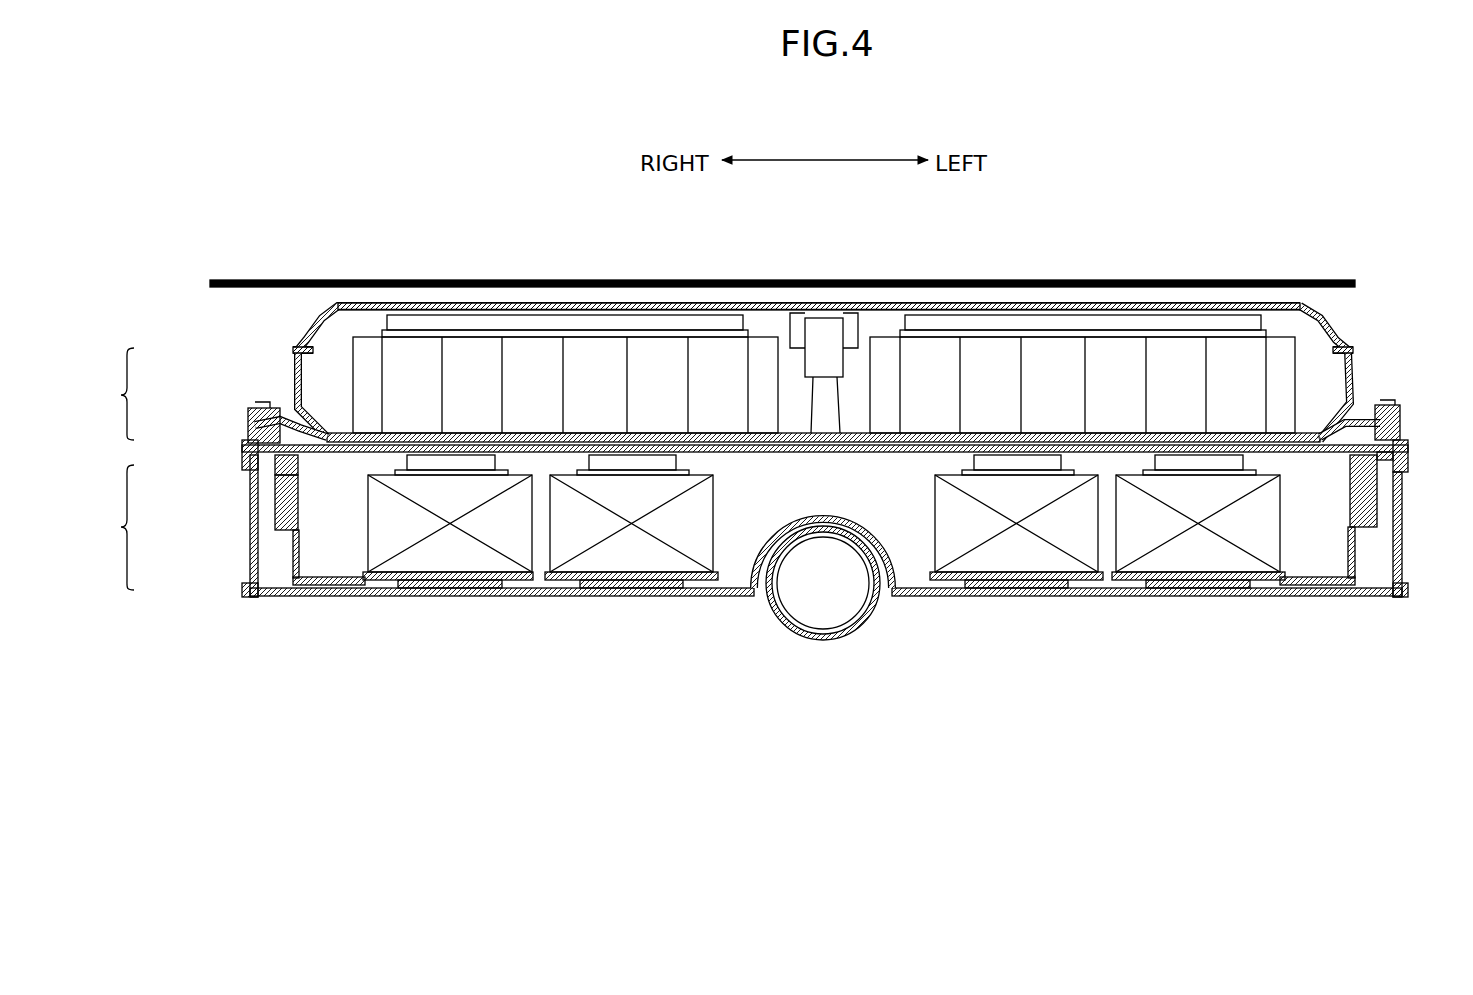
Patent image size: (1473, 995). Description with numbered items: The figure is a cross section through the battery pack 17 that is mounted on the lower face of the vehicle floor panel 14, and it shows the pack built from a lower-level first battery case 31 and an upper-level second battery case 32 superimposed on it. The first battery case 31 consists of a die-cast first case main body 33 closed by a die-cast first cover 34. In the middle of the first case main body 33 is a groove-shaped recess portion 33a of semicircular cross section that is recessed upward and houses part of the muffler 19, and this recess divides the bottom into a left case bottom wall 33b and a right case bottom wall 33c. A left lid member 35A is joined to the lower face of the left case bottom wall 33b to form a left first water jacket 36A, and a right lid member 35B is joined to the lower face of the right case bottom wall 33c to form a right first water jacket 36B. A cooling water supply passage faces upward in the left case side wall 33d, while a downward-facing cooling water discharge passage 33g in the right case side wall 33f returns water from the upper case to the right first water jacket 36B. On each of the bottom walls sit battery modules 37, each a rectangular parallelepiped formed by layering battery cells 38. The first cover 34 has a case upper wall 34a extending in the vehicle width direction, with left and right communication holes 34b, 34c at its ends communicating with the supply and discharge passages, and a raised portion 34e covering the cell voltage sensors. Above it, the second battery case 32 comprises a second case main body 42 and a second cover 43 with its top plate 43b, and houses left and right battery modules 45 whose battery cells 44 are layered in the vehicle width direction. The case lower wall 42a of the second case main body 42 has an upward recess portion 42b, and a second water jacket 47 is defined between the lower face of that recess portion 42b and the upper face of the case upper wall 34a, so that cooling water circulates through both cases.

The floor panel 14 is at (780, 280).
The battery pack 17 is at (283, 325).
The muffler 19 is at (857, 632).
The first battery case 31 is at (112, 527).
The second battery case 32 is at (112, 394).
The first case main body 33 is at (245, 545).
The recess portion 33a is at (857, 520).
The left case bottom wall 33b is at (1100, 573).
The right case bottom wall 33c is at (557, 573).
The left case side wall 33d is at (1402, 497).
The right case side wall 33f is at (250, 553).
The cooling water discharge passage 33g is at (265, 492).
The first cover 34 is at (240, 455).
The case upper wall 34a is at (727, 450).
The left communication hole 34b is at (1378, 453).
The right communication hole 34c is at (265, 455).
The raised portion 34e is at (1380, 493).
The left lid member 35A is at (1105, 597).
The right lid member 35B is at (537, 595).
The left first water jacket 36A is at (1025, 592).
The right first water jacket 36B is at (457, 590).
The battery module 37 is at (357, 548).
The battery cell 38 is at (824, 513).
The second case main body 42 is at (240, 420).
The case lower wall 42a is at (968, 435).
The recess portion 42b is at (978, 440).
The second cover 43 is at (283, 356).
The cover top plate 43b is at (698, 280).
The battery cell 44 is at (585, 348).
The battery module 45 is at (365, 330).
The second water jacket 47 is at (897, 443).